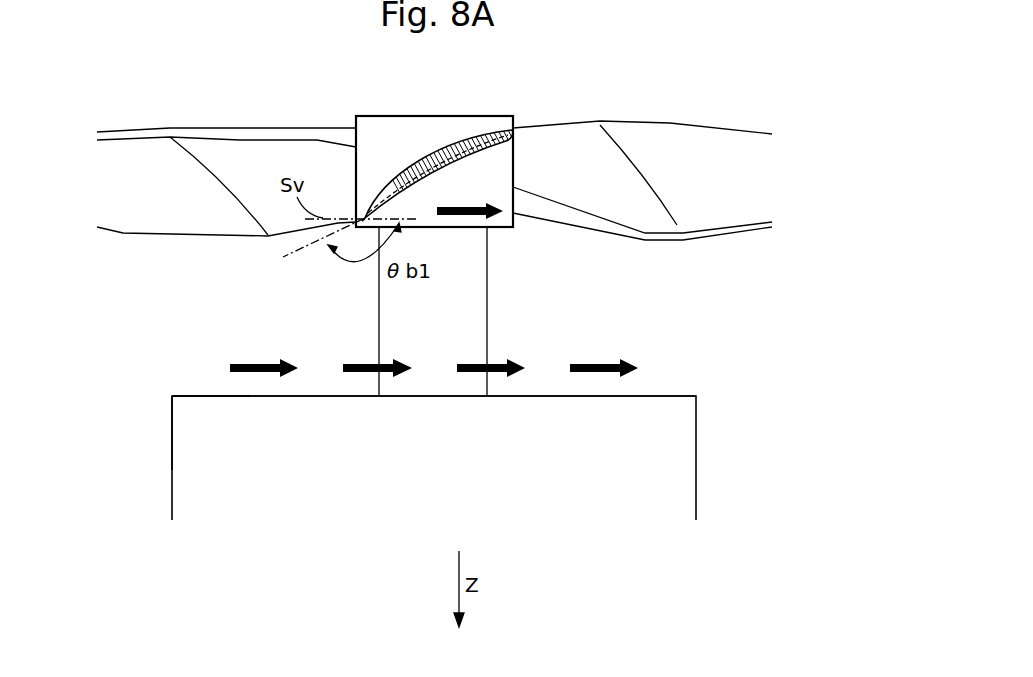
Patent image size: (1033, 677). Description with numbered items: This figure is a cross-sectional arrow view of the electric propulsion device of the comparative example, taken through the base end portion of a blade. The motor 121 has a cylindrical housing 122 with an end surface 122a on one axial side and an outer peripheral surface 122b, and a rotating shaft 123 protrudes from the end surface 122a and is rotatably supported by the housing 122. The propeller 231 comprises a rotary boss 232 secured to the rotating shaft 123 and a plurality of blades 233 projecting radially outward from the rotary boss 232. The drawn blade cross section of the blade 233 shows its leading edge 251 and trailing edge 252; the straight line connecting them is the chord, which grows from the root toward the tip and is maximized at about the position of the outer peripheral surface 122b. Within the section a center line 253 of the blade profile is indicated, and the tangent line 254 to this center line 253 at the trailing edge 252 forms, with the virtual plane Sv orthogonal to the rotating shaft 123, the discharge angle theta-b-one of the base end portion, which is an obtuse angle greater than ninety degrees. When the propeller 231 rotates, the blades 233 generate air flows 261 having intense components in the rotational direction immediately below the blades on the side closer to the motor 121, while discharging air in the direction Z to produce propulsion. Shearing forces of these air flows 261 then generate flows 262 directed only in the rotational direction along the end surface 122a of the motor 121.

The motor 121 is at (697, 396).
The housing 122 is at (678, 430).
The end surface 122a is at (192, 395).
The outer peripheral surface 122b is at (172, 442).
The rotating shaft 123 is at (462, 288).
The propeller 231 is at (731, 129).
The rotary boss 232 is at (388, 126).
The blade 233 is at (678, 148).
The leading edge 251 is at (513, 133).
The trailing edge 252 is at (358, 211).
The center line 253 is at (457, 138).
The tangent line 254 is at (302, 242).
The air flows 261 is at (472, 222).
The flows 262 is at (363, 364).